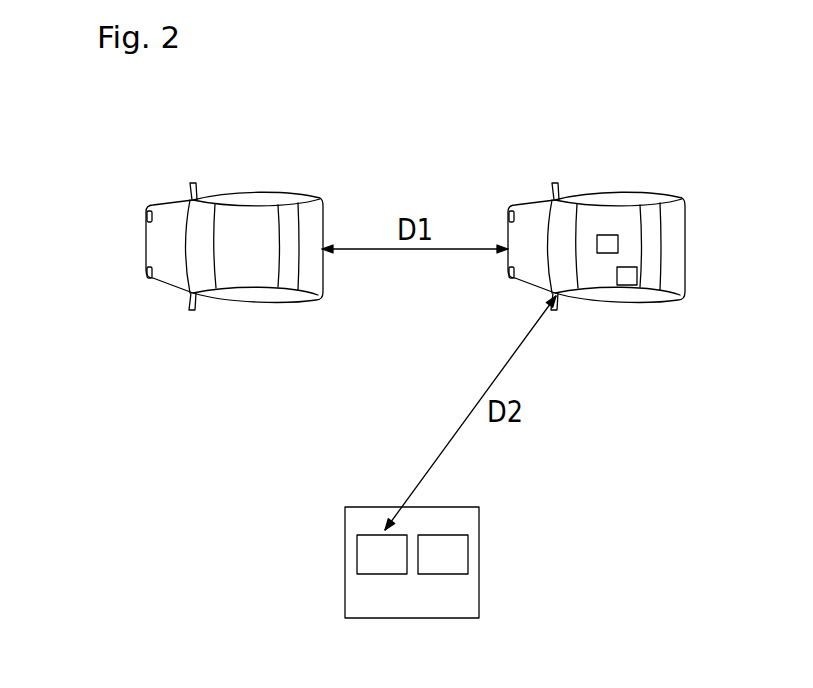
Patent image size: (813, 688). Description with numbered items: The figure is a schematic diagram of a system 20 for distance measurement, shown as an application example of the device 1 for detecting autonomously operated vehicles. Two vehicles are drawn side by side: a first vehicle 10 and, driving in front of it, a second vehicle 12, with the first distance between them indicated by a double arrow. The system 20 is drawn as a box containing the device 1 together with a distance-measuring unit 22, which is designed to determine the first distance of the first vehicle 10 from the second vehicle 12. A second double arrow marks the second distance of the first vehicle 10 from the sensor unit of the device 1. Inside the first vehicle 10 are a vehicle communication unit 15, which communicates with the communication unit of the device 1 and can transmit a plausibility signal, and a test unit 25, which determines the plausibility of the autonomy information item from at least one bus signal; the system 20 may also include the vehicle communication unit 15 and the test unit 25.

The device for detecting autonomously operated vehicles 1 is at (357, 538).
The first vehicle 10 is at (685, 218).
The second vehicle 12 is at (318, 199).
The vehicle communication unit 15 is at (609, 241).
The system for distance measurement 20 is at (480, 584).
The distance-measuring unit 22 is at (467, 536).
The test unit 25 is at (631, 282).